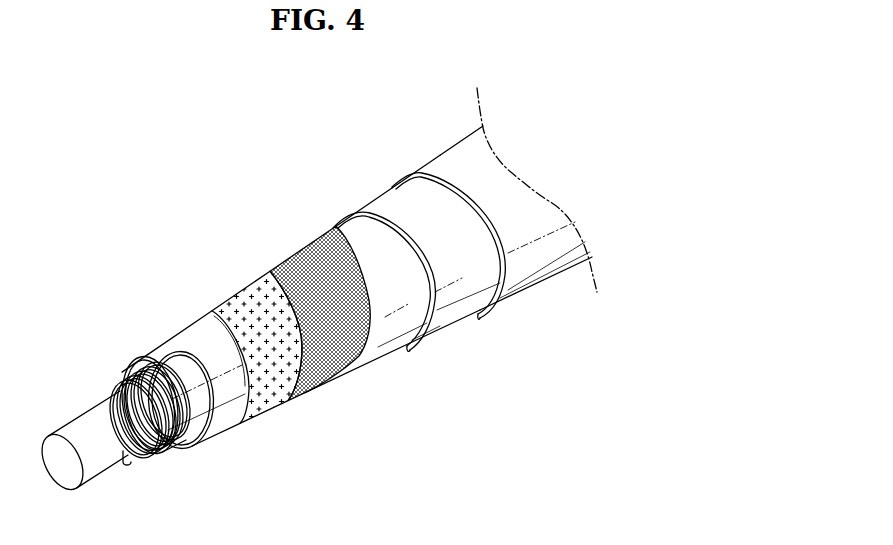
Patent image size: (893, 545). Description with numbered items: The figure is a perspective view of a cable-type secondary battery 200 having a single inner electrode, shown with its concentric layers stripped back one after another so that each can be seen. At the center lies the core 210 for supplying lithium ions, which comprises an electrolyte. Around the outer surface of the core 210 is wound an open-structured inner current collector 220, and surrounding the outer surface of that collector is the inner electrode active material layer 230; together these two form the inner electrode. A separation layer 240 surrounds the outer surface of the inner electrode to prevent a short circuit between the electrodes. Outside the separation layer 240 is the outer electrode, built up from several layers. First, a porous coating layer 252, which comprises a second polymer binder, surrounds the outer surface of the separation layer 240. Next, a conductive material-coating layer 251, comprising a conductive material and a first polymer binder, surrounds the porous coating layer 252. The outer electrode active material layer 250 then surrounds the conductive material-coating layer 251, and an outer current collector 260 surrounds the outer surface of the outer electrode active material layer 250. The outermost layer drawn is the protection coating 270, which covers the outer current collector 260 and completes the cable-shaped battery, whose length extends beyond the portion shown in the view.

The cable-type secondary battery 200 is at (200, 227).
The core for supplying lithium ions 210 is at (73, 433).
The inner current collector 220 is at (117, 402).
The inner electrode active material layer 230 is at (146, 368).
The separation layer 240 is at (182, 345).
The outer electrode active material layer 250 is at (341, 238).
The conductive material-coating layer 251 is at (273, 283).
The porous coating layer 252 is at (222, 318).
The outer current collector 260 is at (392, 198).
The protection coating 270 is at (453, 156).